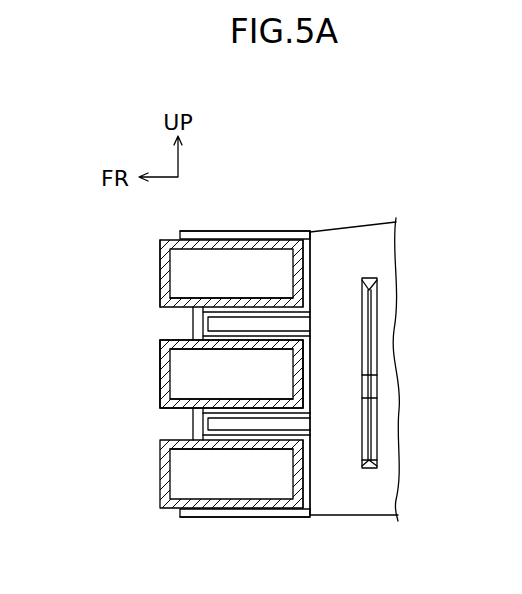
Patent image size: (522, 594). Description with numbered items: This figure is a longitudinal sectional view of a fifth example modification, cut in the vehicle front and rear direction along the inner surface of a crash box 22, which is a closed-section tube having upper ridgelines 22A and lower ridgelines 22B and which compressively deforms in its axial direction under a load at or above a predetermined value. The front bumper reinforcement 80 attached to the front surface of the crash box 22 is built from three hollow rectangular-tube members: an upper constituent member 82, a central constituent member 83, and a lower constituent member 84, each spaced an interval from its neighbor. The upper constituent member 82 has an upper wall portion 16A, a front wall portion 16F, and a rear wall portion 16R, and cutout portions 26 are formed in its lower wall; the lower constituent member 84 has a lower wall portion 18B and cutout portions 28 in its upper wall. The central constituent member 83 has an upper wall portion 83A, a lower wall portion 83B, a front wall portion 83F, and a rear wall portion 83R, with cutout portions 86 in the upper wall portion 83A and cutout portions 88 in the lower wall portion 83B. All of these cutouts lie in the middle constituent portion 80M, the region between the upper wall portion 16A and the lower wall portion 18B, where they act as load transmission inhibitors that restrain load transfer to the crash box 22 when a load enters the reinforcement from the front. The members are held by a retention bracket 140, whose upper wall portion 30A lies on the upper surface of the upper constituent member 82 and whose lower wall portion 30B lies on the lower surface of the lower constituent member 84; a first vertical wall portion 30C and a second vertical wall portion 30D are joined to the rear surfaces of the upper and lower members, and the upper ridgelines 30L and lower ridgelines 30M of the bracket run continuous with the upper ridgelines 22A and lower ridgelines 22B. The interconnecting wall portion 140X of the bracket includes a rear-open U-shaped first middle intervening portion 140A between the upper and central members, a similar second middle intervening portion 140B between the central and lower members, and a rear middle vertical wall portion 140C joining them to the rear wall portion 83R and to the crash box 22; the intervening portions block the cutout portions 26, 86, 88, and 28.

The crash box 22 is at (376, 217).
The upper ridgeline 22A is at (354, 227).
The lower ridgeline 22B is at (370, 517).
The retention bracket 140 is at (286, 219).
The interconnecting wall portion 140X is at (329, 293).
The first middle intervening portion 140A is at (252, 343).
The second middle intervening portion 140B is at (305, 459).
The rear middle vertical wall portion 140C is at (310, 398).
The first vertical wall portion 30C is at (310, 261).
The rear wall portion 16R is at (310, 276).
The second vertical wall portion 30D is at (310, 479).
The upper wall portion 16A is at (232, 238).
The upper wall portion 30A is at (268, 231).
The upper ridgeline 30L is at (298, 232).
The lower wall portion 18B is at (195, 517).
The lower wall portion 30B is at (255, 518).
The lower ridgeline 30M is at (290, 519).
The front bumper reinforcement 80 is at (261, 350).
The upper constituent member 82 is at (130, 282).
The front wall portion 16F is at (160, 262).
The cutout portion 26 is at (212, 301).
The cutout portion 86 is at (195, 322).
The middle constituent portion 80M is at (134, 360).
The central constituent member 83 is at (134, 386).
The upper wall portion 83A is at (187, 349).
The lower wall portion 83B is at (187, 398).
The front wall portion 83F is at (160, 390).
The rear wall portion 83R is at (305, 360).
The cutout portion 88 is at (195, 423).
The lower constituent member 84 is at (136, 481).
The cutout portion 28 is at (212, 456).